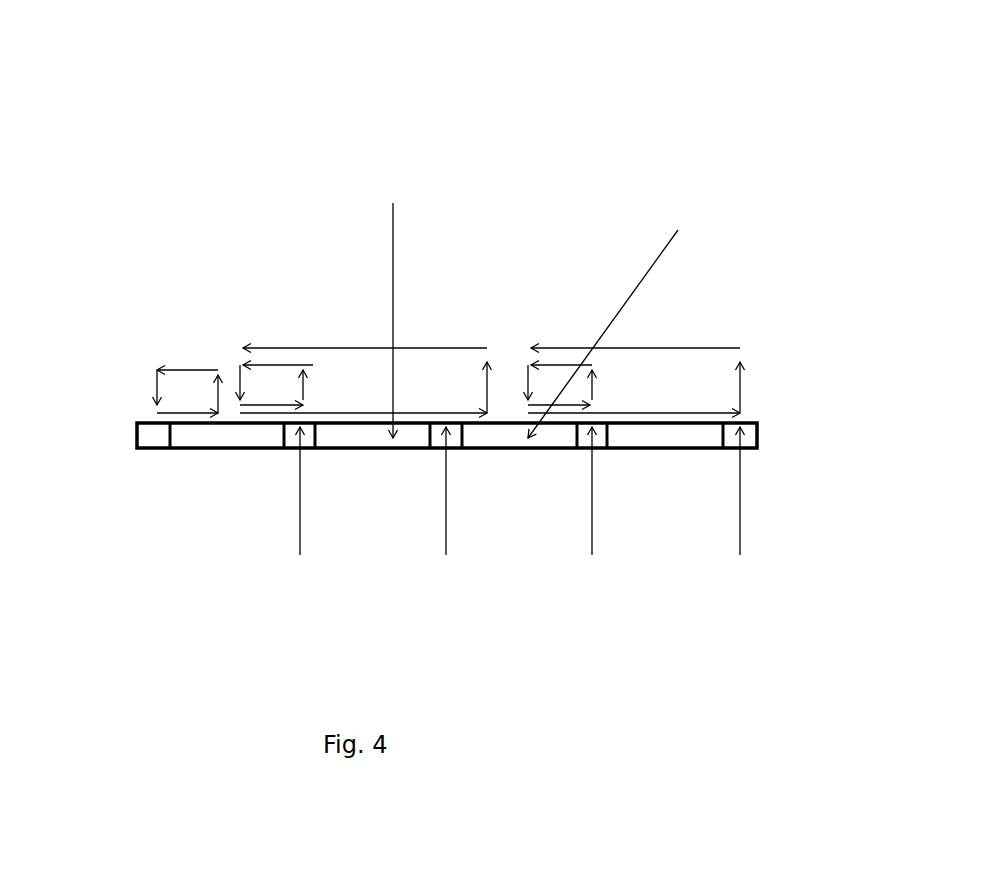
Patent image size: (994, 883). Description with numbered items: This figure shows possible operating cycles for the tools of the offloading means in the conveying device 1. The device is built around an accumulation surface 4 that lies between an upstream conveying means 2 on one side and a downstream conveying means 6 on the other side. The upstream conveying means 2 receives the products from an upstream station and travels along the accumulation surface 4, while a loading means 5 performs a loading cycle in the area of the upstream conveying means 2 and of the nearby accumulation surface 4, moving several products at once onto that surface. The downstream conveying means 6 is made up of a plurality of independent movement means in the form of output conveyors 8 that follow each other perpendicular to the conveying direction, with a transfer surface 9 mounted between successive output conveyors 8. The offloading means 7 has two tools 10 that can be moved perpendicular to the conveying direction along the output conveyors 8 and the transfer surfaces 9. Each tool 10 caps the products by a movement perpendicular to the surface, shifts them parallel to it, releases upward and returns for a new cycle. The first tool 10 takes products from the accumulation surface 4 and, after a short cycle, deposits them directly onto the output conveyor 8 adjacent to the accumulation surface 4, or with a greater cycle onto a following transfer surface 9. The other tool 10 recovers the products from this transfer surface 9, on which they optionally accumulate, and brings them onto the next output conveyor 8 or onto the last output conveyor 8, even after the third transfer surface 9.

The conveying device 1 is at (463, 108).
The upstream conveying means 2 is at (134, 568).
The accumulation surface 4 is at (243, 452).
The loading means 5 is at (172, 345).
The downstream conveying means 6 is at (665, 607).
The offloading means 7 is at (540, 225).
The output conveyor 8 is at (519, 507).
The transfer surface 9 is at (539, 306).
The tool 10 is at (311, 322).